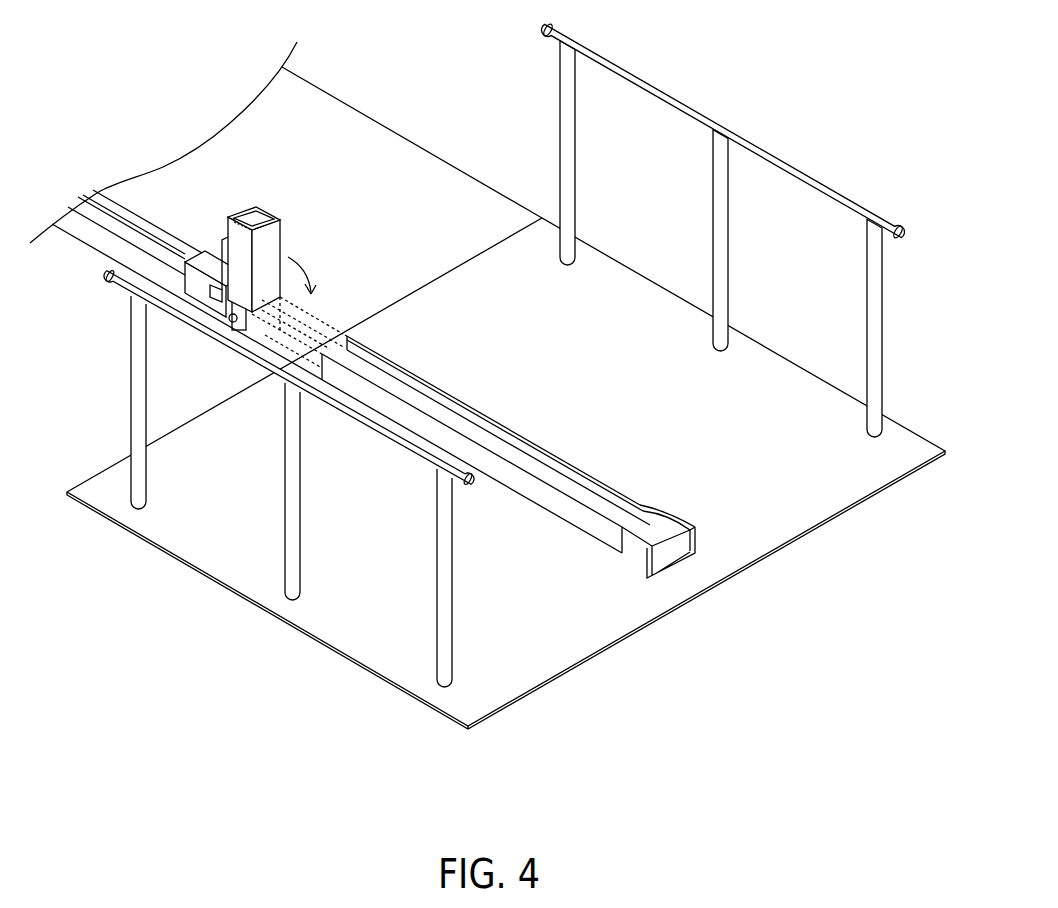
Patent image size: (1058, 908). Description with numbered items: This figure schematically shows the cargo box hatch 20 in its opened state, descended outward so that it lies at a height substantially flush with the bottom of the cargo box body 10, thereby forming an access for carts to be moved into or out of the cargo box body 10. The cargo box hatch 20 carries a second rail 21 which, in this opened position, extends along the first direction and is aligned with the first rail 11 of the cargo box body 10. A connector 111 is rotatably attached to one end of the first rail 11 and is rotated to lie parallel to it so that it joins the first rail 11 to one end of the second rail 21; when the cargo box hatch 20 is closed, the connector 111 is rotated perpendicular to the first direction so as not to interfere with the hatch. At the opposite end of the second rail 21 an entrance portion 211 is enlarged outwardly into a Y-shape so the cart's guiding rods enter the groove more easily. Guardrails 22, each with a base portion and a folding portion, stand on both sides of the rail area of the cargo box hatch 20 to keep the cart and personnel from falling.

The cargo box body 10 is at (350, 126).
The first rail 11 is at (143, 223).
The connector 111 is at (263, 213).
The cargo box hatch 20 is at (373, 638).
The second rail 21 is at (593, 476).
The entrance portion 211 is at (665, 553).
The guardrails 22 is at (882, 325).